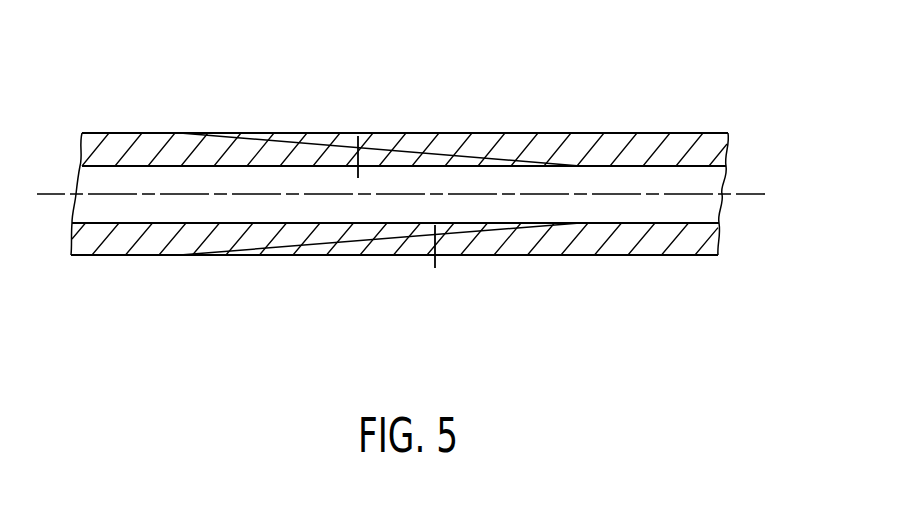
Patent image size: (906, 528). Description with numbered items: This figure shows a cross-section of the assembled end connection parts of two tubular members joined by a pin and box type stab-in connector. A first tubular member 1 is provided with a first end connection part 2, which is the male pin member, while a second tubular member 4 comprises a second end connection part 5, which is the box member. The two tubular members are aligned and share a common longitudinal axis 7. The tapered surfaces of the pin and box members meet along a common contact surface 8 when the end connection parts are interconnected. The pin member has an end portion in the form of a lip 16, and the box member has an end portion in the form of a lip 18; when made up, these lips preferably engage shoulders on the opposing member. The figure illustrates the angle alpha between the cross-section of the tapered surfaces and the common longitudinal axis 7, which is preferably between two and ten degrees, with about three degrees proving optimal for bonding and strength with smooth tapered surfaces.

The first tubular member 1 is at (147, 264).
The first end connection part 2 is at (292, 233).
The second tubular member 4 is at (595, 283).
The second end connection part 5 is at (488, 135).
The common longitudinal axis 7 is at (752, 195).
The common contact surface 8 is at (385, 135).
The lip 16 is at (508, 232).
The lip 18 is at (310, 135).